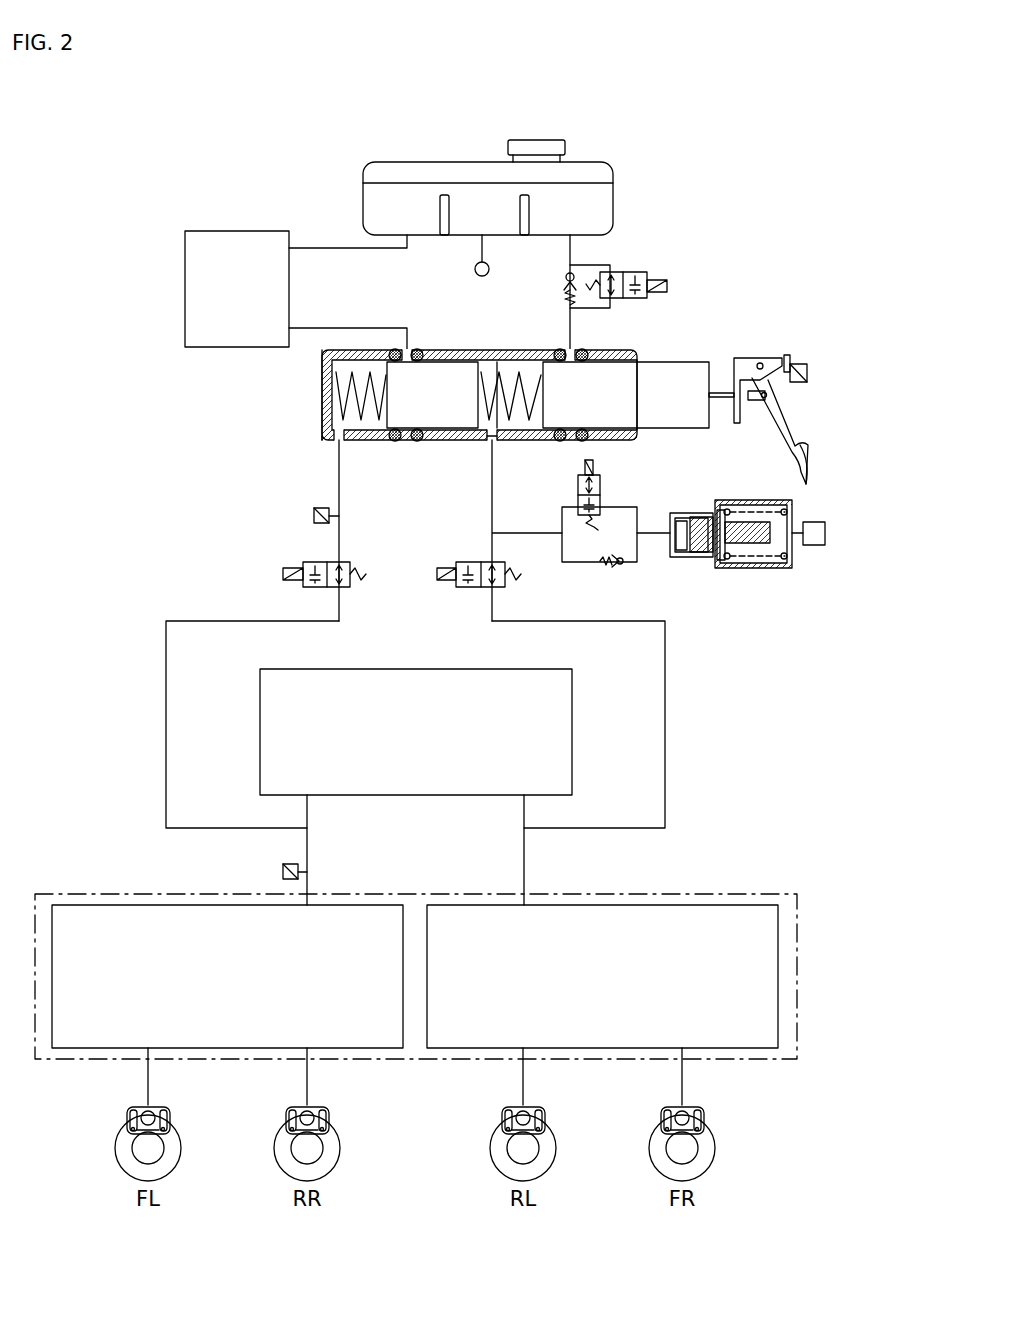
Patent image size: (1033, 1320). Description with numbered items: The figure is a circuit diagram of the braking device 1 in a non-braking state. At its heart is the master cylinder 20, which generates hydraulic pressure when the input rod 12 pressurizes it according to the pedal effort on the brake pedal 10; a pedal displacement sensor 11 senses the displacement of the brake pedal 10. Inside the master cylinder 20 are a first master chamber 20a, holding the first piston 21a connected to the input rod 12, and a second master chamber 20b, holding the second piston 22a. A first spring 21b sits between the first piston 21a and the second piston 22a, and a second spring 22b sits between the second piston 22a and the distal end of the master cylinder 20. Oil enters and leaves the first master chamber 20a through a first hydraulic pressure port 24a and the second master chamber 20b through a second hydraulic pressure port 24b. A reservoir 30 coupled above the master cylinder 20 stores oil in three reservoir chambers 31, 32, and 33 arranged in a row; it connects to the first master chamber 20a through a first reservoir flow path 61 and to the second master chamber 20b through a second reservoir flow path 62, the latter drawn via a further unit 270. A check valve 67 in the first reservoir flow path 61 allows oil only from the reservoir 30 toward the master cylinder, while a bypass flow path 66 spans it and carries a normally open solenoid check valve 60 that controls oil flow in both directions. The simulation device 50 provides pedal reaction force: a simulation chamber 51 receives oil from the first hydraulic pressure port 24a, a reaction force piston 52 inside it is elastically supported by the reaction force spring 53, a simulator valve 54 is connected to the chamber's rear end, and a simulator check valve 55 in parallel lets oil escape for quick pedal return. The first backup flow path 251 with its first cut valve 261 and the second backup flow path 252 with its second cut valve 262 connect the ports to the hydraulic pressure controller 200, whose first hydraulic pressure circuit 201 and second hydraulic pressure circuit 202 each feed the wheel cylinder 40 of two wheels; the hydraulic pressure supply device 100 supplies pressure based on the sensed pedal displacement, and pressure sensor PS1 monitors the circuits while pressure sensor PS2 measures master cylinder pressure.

The braking device 1 is at (331, 108).
The brake pedal 10 is at (785, 410).
The pedal displacement sensor 11 is at (805, 364).
The input rod 12 is at (722, 392).
The master cylinder 20 is at (322, 370).
The first master chamber 20a is at (519, 366).
The second master chamber 20b is at (346, 352).
The first piston 21a is at (677, 372).
The first spring 21b is at (519, 440).
The second piston 22a is at (447, 366).
The second spring 22b is at (336, 400).
The first hydraulic pressure port 24a is at (490, 443).
The second hydraulic pressure port 24b is at (325, 440).
The reservoir 30 is at (363, 178).
The reservoir chamber 31 is at (587, 201).
The reservoir chamber 32 is at (401, 201).
The reservoir chamber 33 is at (487, 201).
The wheel cylinder 40 is at (170, 1122).
The simulation device 50 is at (710, 538).
The simulation chamber 51 is at (768, 568).
The reaction force piston 52 is at (700, 552).
The reaction force spring 53 is at (727, 550).
The simulator valve 54 is at (600, 478).
The simulator check valve 55 is at (620, 566).
The check valve 60 is at (651, 272).
The first reservoir flow path 61 is at (570, 250).
The second reservoir flow path 62 is at (322, 248).
The bypass flow path 66 is at (606, 308).
The check valve 67 is at (565, 280).
The hydraulic pressure supply device 100 is at (252, 696).
The hydraulic pressure controller 200 is at (772, 893).
The first hydraulic pressure circuit 201 is at (698, 905).
The second hydraulic pressure circuit 202 is at (122, 905).
The first backup flow path 251 is at (492, 487).
The second backup flow path 252 is at (339, 487).
The first cut valve 261 is at (520, 590).
The second cut valve 262 is at (353, 573).
The hydraulic pressure supply device 270 is at (178, 270).
The hydraulic flow path pressure sensor PS1 is at (283, 872).
The backup flow path pressure sensor PS2 is at (314, 516).